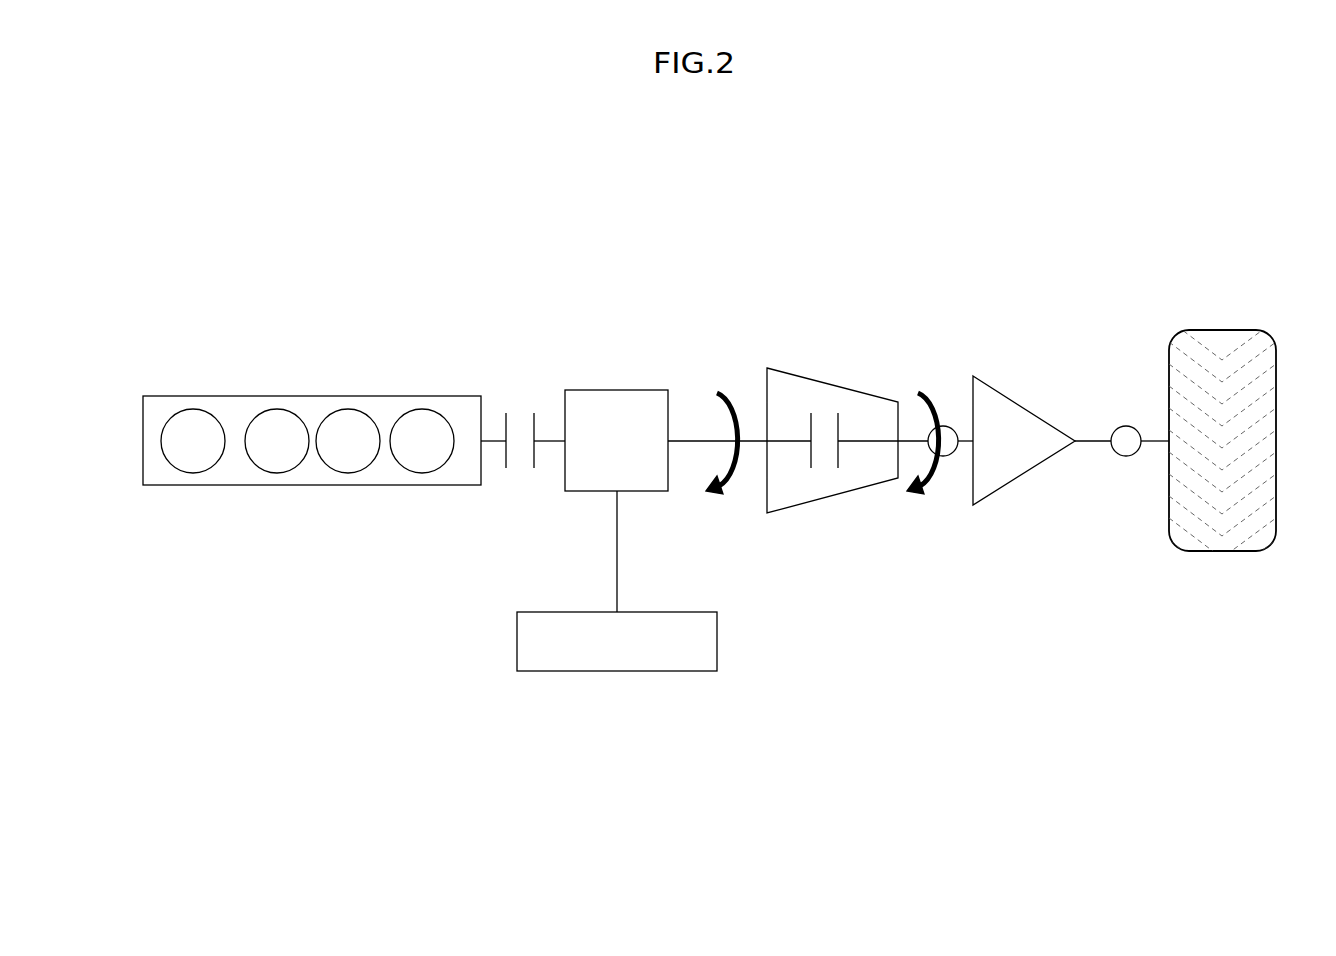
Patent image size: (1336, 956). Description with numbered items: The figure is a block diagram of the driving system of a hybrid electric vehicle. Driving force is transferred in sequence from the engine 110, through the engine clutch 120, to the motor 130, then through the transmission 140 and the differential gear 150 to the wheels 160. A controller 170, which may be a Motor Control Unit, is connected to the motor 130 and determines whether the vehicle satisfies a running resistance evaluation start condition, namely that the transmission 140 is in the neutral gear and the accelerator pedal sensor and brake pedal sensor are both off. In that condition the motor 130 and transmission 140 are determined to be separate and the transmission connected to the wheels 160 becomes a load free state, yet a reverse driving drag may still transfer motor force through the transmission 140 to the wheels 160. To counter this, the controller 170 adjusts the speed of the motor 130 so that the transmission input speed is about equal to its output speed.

The engine 110 is at (311, 395).
The engine clutch 120 is at (534, 408).
The motor 130 is at (616, 388).
The transmission 140 is at (831, 385).
The differential gear 150 is at (1023, 407).
The wheels 160 is at (1222, 330).
The controller 170 is at (718, 642).